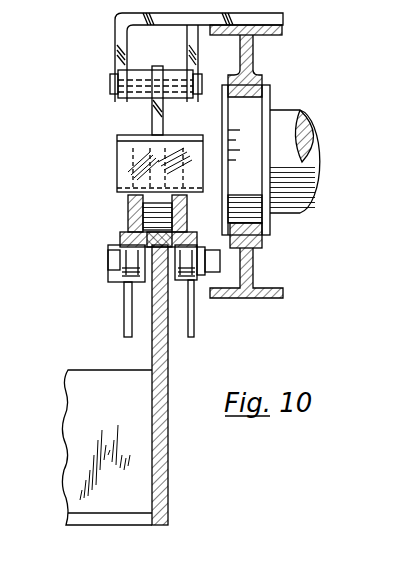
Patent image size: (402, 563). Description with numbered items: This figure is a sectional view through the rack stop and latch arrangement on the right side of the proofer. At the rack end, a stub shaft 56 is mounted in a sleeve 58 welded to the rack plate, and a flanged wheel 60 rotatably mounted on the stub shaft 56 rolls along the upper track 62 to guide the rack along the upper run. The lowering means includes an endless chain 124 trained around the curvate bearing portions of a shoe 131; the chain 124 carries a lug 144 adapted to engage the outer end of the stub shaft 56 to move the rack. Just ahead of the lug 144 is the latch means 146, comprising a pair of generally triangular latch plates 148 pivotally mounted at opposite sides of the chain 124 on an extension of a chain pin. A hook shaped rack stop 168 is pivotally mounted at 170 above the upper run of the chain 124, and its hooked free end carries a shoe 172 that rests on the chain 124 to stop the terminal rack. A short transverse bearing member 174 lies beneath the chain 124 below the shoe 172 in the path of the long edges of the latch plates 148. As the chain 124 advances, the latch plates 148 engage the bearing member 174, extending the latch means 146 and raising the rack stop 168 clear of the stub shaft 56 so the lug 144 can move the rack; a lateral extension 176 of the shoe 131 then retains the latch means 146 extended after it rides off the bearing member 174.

The stub shaft 56 is at (207, 130).
The sleeve 58 is at (305, 212).
The flanged wheel 60 is at (270, 108).
The upper track 62 is at (255, 263).
The endless chain 124 is at (130, 200).
The shoe 131 is at (170, 471).
The lug 144 is at (125, 165).
The latch means 146 is at (58, 252).
The latch plate 148 is at (124, 325).
The rack stop 168 is at (150, 122).
The pivot 170 is at (112, 82).
The shoe 172 is at (117, 182).
The bearing member 174 is at (120, 283).
The lateral extension 176 is at (130, 236).